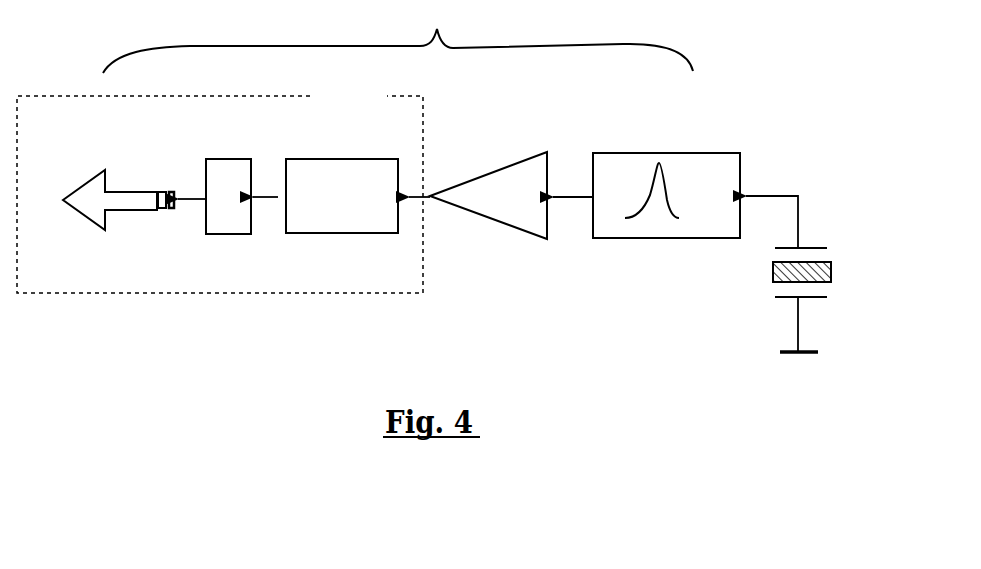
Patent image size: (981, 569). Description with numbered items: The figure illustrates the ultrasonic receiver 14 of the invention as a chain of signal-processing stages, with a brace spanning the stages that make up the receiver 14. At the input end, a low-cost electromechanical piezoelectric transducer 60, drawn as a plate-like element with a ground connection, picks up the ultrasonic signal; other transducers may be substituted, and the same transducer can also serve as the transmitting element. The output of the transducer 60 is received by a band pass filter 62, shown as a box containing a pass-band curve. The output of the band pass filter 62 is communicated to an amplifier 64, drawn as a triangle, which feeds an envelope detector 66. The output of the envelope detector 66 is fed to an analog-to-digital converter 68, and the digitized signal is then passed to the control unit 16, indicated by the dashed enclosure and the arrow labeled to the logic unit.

The receiver 14 is at (398, 37).
The control unit 16 is at (100, 283).
The piezoelectric transducer 60 is at (831, 270).
The band pass filter 62 is at (740, 168).
The amplifier 64 is at (505, 162).
The envelope detector 66 is at (328, 158).
The analog-to-digital converter 68 is at (228, 224).